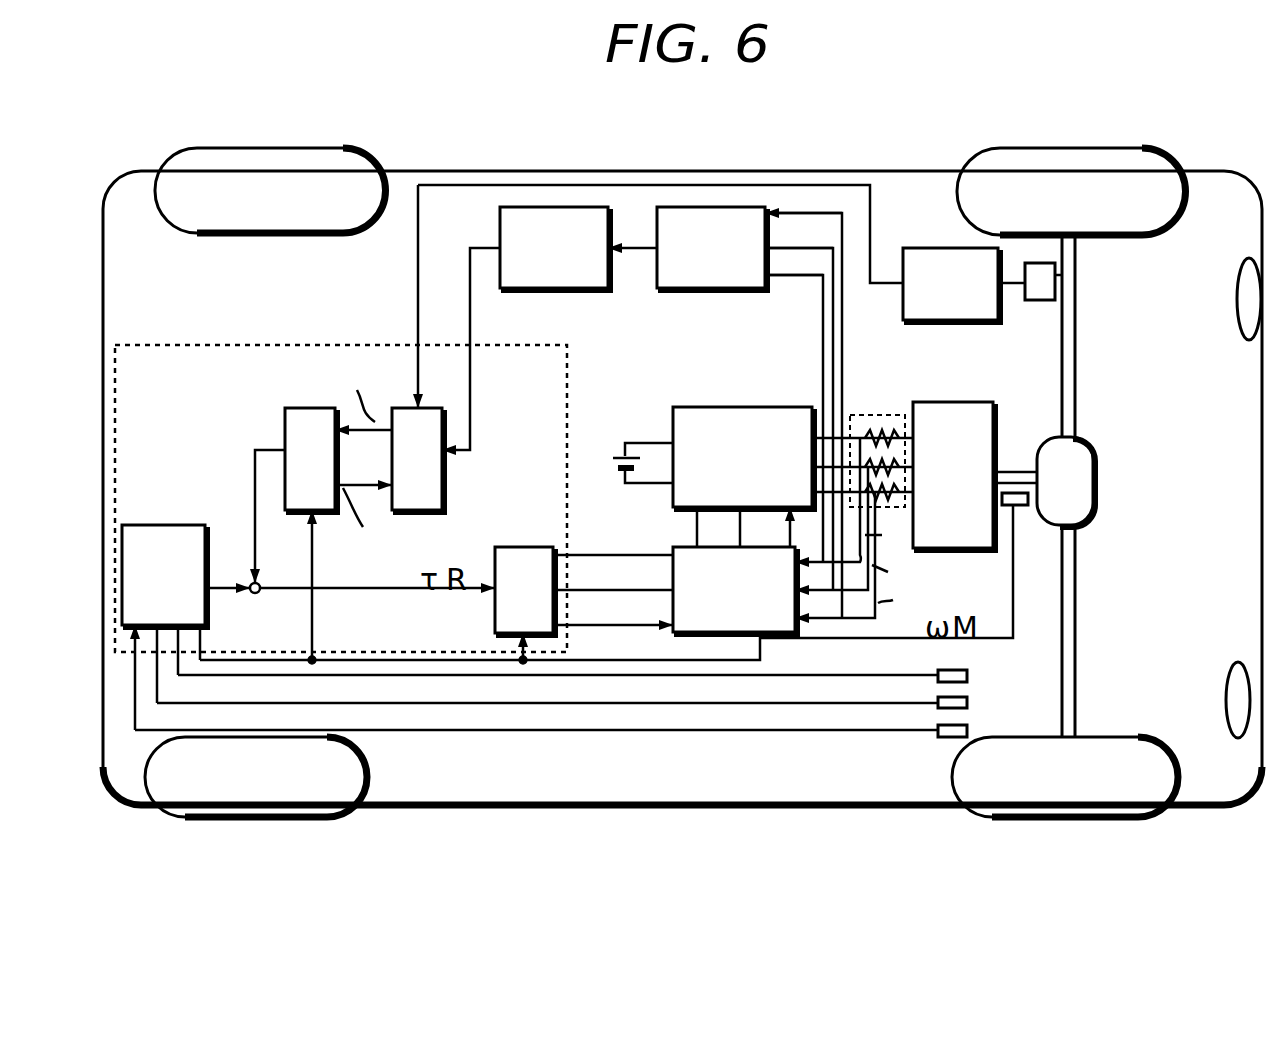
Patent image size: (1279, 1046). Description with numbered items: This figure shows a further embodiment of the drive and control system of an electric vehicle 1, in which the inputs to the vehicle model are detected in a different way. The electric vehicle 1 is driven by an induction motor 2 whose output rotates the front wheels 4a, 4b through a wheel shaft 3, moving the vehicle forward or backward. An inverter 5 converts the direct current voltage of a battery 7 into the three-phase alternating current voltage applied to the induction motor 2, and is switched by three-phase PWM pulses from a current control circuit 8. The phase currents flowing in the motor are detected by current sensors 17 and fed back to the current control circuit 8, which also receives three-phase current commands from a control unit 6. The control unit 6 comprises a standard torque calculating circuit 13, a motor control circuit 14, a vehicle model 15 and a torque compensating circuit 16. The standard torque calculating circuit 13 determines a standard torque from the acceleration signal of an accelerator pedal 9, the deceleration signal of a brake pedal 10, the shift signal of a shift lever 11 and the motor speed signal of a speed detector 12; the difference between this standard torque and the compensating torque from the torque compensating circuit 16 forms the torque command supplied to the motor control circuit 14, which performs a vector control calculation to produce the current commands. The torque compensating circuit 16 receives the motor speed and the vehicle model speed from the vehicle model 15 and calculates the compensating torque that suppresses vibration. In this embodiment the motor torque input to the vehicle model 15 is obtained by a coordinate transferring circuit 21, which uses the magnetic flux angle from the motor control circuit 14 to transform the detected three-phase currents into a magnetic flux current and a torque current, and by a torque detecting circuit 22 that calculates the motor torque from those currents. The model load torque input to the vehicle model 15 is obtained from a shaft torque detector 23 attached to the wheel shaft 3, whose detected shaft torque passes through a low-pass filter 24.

The electric vehicle 1 is at (650, 171).
The induction motor 2 is at (978, 365).
The wheel shaft 3 is at (1078, 408).
The front wheel 4a is at (1042, 148).
The front wheel 4b is at (1065, 822).
The inverter 5 is at (770, 378).
The control unit 6 is at (390, 345).
The battery 7 is at (618, 458).
The current control circuit 8 is at (717, 633).
The accelerator pedal 9 is at (967, 731).
The brake pedal 10 is at (967, 703).
The shift lever 11 is at (967, 676).
The speed detector 12 is at (1020, 505).
The standard torque calculating circuit 13 is at (137, 525).
The motor control circuit 14 is at (547, 547).
The vehicle model 15 is at (437, 408).
The torque compensating circuit 16 is at (300, 408).
The current sensors 17 is at (903, 415).
The coordinate transferring circuit 21 is at (727, 207).
The torque detecting circuit 22 is at (588, 135).
The shaft torque detector 23 is at (1060, 280).
The filter 24 is at (932, 248).